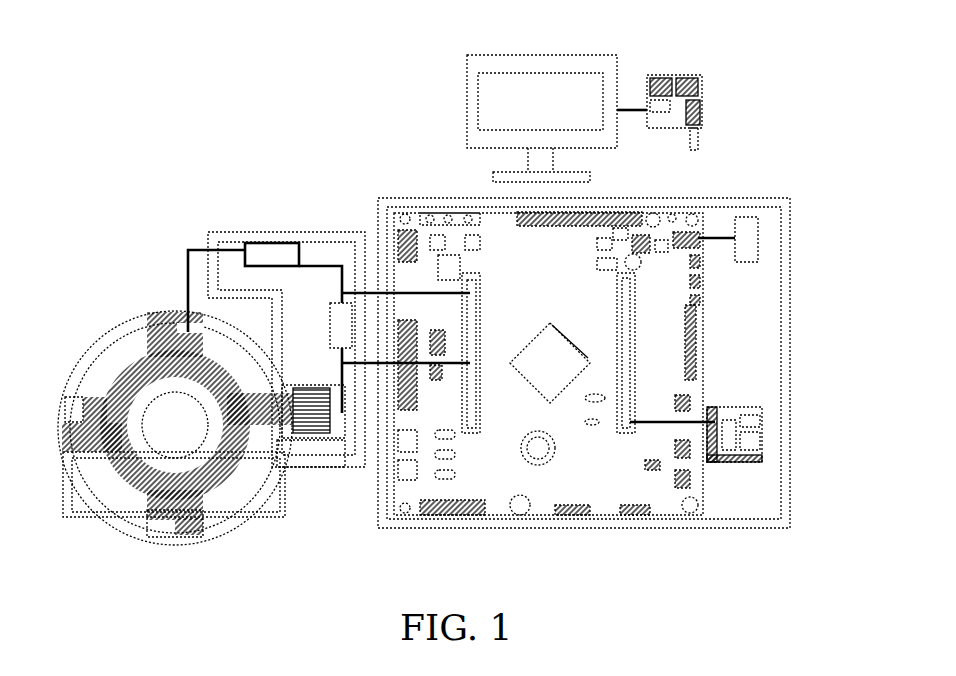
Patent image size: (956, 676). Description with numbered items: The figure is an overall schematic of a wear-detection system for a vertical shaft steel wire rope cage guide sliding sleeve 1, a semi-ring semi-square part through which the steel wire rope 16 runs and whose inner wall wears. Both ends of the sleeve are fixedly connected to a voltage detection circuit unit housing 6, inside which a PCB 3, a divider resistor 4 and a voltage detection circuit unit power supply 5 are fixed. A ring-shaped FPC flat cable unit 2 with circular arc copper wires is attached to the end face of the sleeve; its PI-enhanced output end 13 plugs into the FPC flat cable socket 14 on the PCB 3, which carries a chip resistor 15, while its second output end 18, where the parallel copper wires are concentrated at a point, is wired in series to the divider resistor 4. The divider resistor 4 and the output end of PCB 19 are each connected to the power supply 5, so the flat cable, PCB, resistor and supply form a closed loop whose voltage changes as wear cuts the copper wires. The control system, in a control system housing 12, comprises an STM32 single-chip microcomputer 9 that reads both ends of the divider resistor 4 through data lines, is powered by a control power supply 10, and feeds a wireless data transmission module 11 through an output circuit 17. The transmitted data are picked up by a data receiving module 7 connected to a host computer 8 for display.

The vertical shaft steel wire rope cage guide sliding sleeve 1 is at (117, 362).
The FPC flat cable unit 2 is at (193, 358).
The PCB 3 is at (330, 395).
The divider resistor 4 is at (335, 333).
The voltage detection circuit unit power supply 5 is at (287, 250).
The voltage detection circuit unit housing 6 is at (335, 238).
The data receiving module 7 is at (698, 95).
The host computer 8 is at (548, 172).
The STM32 single-chip microcomputer 9 is at (547, 368).
The control power supply 10 is at (752, 238).
The wireless data transmission module 11 is at (740, 415).
The control system housing 12 is at (788, 392).
The PI-enhanced output end 13 is at (268, 432).
The FPC flat cable socket 14 is at (283, 430).
The chip resistor 15 is at (315, 437).
The steel wire rope 16 is at (173, 433).
The output circuit 17 is at (663, 424).
The second output end 18 is at (188, 336).
The output end of PCB 19 is at (338, 417).